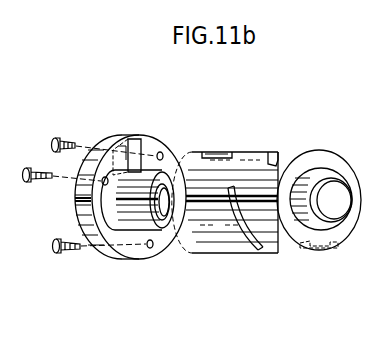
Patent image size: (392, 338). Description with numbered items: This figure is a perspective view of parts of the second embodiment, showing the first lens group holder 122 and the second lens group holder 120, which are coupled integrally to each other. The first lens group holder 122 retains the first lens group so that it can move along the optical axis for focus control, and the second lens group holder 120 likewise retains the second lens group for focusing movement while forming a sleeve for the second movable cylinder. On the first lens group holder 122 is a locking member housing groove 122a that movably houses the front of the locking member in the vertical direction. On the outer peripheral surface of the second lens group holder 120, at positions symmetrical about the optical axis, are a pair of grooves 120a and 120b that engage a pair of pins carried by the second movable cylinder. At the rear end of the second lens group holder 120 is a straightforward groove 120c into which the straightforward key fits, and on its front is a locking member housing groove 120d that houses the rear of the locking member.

The second lens group holder 120 is at (215, 262).
The groove 120a is at (262, 255).
The groove 120b is at (272, 152).
The straightforward groove 120c is at (334, 250).
The locking member housing groove 120d is at (205, 152).
The first lens group holder 122 is at (105, 258).
The locking member housing groove 122a is at (128, 139).